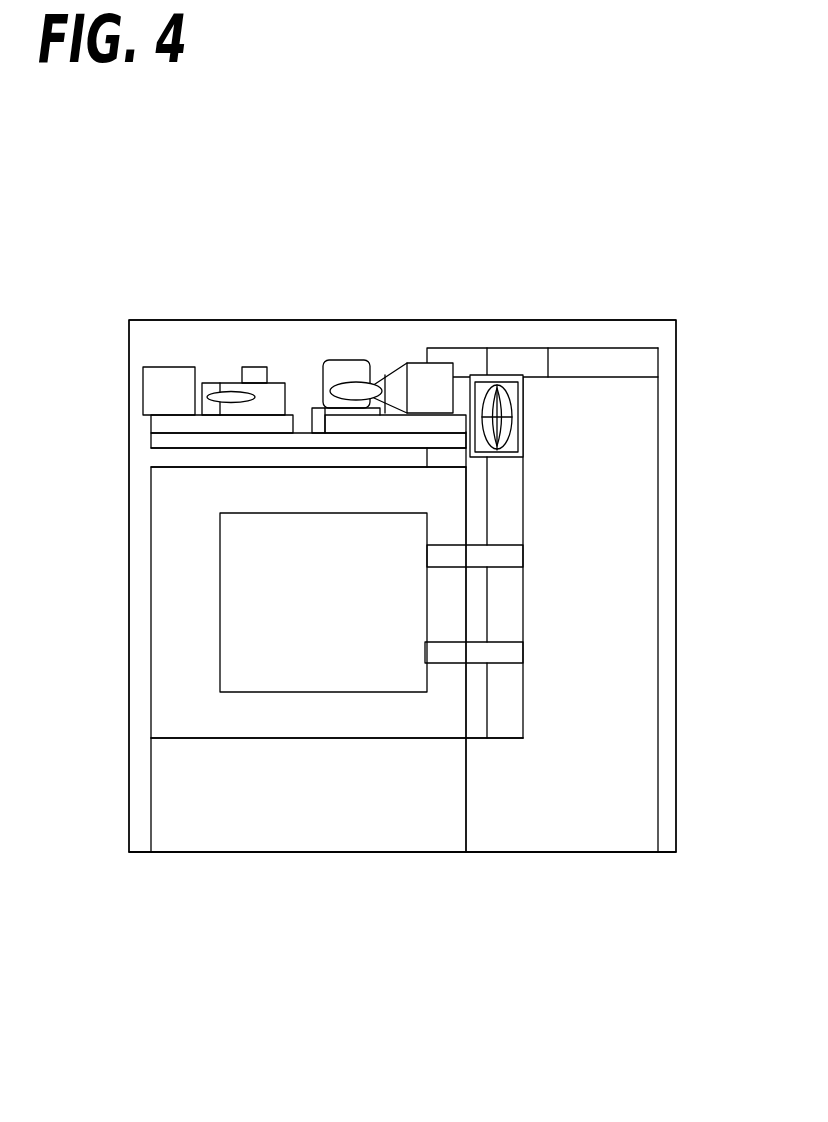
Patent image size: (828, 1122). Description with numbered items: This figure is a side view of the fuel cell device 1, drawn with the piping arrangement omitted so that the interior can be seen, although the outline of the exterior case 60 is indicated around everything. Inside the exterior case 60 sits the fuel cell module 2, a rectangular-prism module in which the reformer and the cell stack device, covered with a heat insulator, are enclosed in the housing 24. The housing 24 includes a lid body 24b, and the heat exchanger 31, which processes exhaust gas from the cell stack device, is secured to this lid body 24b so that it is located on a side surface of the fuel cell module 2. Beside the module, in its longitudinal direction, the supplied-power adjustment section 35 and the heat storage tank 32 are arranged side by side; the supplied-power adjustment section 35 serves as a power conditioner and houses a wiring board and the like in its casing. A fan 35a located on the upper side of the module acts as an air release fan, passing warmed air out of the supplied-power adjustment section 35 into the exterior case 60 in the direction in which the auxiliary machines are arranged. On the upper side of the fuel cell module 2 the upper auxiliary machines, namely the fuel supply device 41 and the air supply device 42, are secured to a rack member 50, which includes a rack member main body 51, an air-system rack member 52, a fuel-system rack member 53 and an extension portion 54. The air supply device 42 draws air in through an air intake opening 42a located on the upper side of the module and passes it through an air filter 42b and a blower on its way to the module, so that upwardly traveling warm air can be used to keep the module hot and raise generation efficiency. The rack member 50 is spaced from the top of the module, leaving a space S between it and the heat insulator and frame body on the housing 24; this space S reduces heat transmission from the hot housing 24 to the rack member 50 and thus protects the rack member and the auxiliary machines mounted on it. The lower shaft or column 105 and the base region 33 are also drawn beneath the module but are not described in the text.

The fuel cell device 1 is at (622, 188).
The fuel cell module 2 is at (151, 613).
The housing 24 is at (292, 467).
The lid body 24b is at (170, 692).
The heat exchanger 31 is at (402, 683).
The heat storage tank 32 is at (550, 815).
The bottom wall 33 is at (162, 830).
The supplied-power adjustment section 35 is at (573, 363).
The fan 35a is at (513, 393).
The fuel supply device 41 is at (243, 368).
The air supply device 42 is at (344, 373).
The air intake opening 42a is at (455, 363).
The air filter 42b is at (415, 365).
The rack member 50 is at (162, 437).
The rack member main body 51 is at (170, 443).
The air-system rack member 52 is at (383, 422).
The fuel-system rack member 53 is at (168, 423).
The extension portion 54 is at (313, 408).
The exterior case 60 is at (643, 320).
The shaft 105 is at (477, 658).
The space S is at (193, 460).